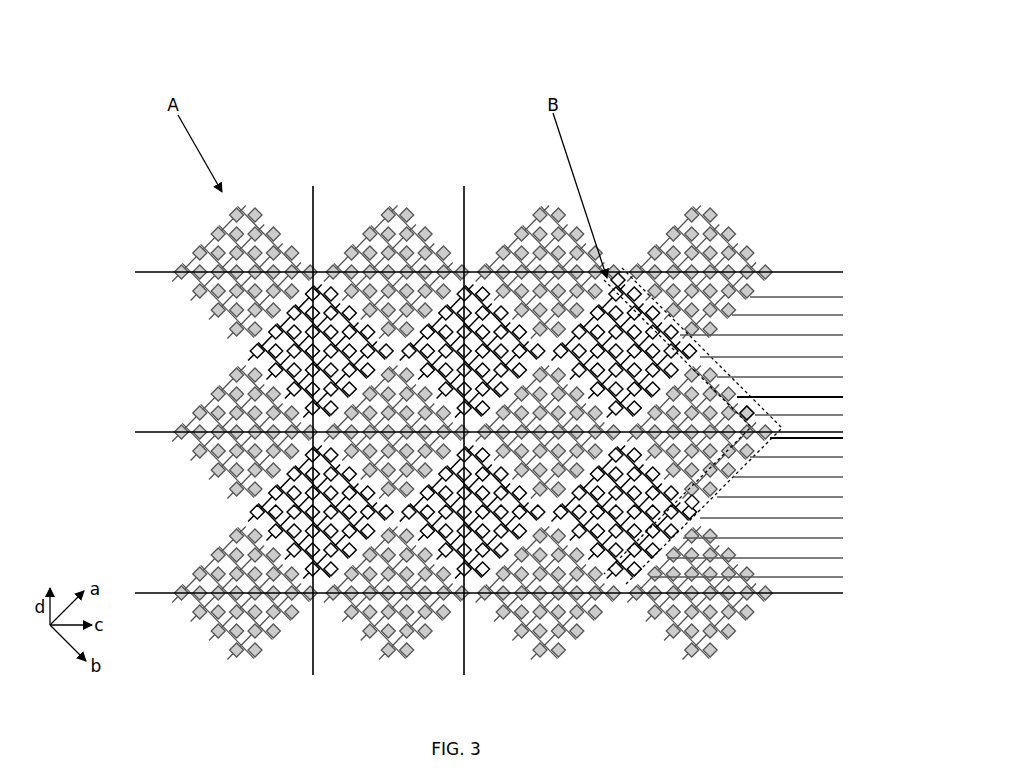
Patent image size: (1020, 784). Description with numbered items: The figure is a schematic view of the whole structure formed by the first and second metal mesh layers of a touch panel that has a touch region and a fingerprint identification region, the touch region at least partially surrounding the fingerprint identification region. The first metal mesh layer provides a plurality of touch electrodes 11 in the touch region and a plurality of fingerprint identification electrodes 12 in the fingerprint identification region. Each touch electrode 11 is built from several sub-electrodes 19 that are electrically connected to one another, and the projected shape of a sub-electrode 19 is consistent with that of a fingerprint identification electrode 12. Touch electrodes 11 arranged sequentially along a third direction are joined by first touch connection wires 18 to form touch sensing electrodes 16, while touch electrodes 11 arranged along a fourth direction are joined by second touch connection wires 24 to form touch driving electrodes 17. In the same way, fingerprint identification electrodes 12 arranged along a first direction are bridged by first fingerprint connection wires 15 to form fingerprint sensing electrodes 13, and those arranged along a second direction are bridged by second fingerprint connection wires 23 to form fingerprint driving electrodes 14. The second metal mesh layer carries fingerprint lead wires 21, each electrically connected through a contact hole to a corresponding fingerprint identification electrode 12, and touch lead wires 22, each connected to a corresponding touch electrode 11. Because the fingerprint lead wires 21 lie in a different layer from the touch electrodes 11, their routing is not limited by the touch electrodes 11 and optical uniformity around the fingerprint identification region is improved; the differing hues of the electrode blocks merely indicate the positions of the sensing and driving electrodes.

The touch electrode 11 is at (373, 95).
The fingerprint identification electrode 12 is at (707, 365).
The fingerprint sensing electrode 13 is at (887, 260).
The fingerprint driving electrode 14 is at (887, 532).
The first fingerprint connection wire 15 is at (673, 500).
The touch sensing electrode 16 is at (323, 57).
The touch driving electrode 17 is at (48, 267).
The first touch connection wire 18 is at (313, 270).
The sub-electrode 19 is at (258, 212).
The fingerprint lead wire 21 is at (827, 397).
The touch lead wire 22 is at (818, 272).
The second fingerprint connection wire 23 is at (757, 417).
The second touch connection wire 24 is at (322, 418).